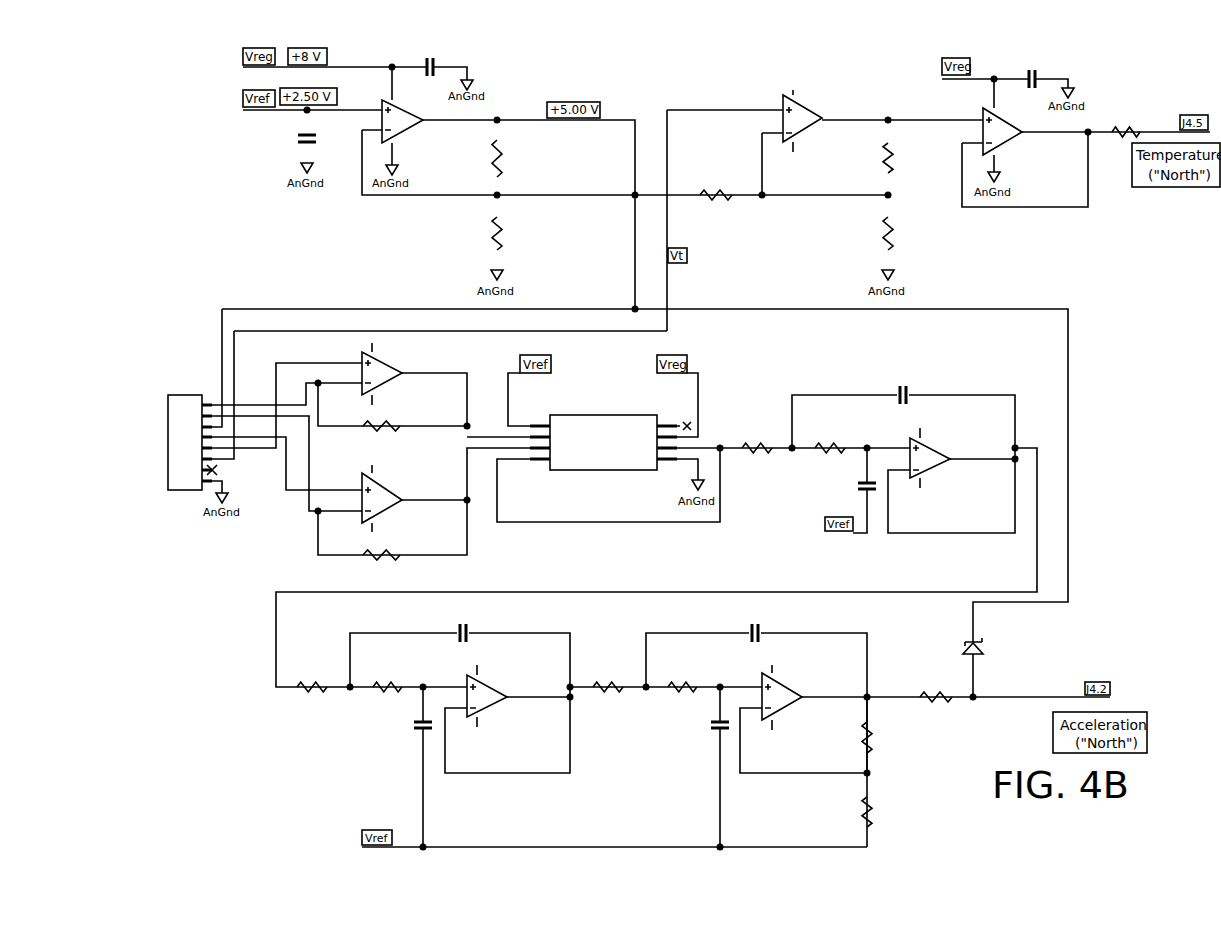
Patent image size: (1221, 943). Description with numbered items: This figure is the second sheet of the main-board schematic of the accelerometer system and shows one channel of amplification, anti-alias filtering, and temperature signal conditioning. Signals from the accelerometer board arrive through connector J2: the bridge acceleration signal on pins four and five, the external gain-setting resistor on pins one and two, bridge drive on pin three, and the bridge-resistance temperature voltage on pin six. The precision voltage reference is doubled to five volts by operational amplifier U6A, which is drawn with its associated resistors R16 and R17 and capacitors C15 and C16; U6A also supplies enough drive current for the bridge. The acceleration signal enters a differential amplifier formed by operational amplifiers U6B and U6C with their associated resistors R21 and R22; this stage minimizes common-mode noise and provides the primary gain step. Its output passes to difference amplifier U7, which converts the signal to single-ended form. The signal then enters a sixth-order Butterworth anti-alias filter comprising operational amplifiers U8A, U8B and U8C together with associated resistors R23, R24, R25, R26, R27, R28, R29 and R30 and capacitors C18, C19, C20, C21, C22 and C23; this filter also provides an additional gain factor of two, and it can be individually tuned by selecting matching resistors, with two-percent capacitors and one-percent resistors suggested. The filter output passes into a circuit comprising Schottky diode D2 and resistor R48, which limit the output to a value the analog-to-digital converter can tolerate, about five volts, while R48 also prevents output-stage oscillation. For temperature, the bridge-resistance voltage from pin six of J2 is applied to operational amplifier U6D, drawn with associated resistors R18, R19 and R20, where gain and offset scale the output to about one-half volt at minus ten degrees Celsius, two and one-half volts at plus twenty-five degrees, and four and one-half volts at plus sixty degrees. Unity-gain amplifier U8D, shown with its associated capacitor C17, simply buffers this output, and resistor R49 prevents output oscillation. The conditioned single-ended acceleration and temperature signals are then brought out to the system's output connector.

The capacitor 0.1 uF X7R C15 is at (433, 56).
The capacitor 0.1 uF C16 is at (325, 135).
The capacitor 0.1 uF X7R C17 is at (1036, 66).
The capacitor 0.15 uF 2% C18 is at (925, 385).
The capacitor 0.12 uF 2% C19 is at (832, 490).
The capacitor 0.22 uF 2% C20 is at (480, 623).
The capacitor 0.10 uF 2% C21 is at (393, 729).
The capacitor 0.18 uF 2% C22 is at (777, 623).
The capacitor 0.15 uF 2% C23 is at (688, 729).
The resistor 10.0K R16 is at (514, 158).
The resistor 10.0K R17 is at (514, 232).
The resistor 178K R18 is at (904, 156).
The resistor 4.53K R19 is at (905, 232).
The resistor 45.3K R20 is at (715, 194).
The resistor 49.9K R21 is at (376, 433).
The resistor 49.9K R22 is at (376, 562).
The resistor 15.8K R23 is at (758, 444).
The resistor 34.8K R24 is at (831, 444).
The resistor 15.8K R25 is at (314, 681).
The resistor 29.4K R26 is at (390, 681).
The resistor 23.7K R27 is at (610, 681).
The resistor 15.8K R28 is at (685, 681).
The resistor 20.0K R29 is at (886, 736).
The resistor 20.0K R30 is at (886, 810).
The resistor R48 is at (924, 695).
The resistor R49 is at (1126, 113).
The operational amplifier U6A is at (422, 116).
The operational amplifier U6B is at (402, 372).
The operational amplifier U6C is at (384, 496).
The operational amplifier U6D is at (804, 117).
The difference amplifier U7 is at (603, 425).
The operational amplifier U8A is at (949, 457).
The operational amplifier U8B is at (506, 695).
The operational amplifier U8C is at (785, 694).
The unity gain amplifier U8D is at (1004, 125).
The Schottky diode D2 is at (999, 650).
The connector J2 is at (190, 434).